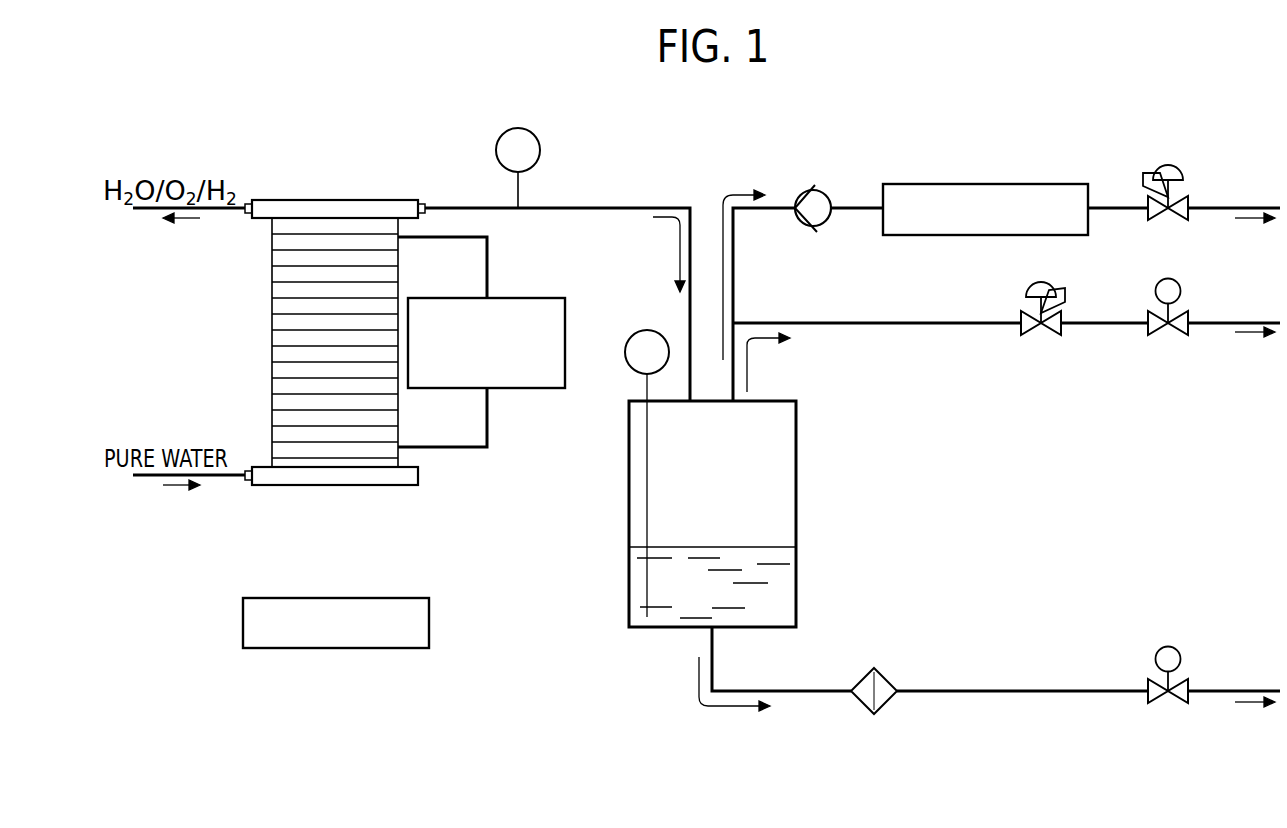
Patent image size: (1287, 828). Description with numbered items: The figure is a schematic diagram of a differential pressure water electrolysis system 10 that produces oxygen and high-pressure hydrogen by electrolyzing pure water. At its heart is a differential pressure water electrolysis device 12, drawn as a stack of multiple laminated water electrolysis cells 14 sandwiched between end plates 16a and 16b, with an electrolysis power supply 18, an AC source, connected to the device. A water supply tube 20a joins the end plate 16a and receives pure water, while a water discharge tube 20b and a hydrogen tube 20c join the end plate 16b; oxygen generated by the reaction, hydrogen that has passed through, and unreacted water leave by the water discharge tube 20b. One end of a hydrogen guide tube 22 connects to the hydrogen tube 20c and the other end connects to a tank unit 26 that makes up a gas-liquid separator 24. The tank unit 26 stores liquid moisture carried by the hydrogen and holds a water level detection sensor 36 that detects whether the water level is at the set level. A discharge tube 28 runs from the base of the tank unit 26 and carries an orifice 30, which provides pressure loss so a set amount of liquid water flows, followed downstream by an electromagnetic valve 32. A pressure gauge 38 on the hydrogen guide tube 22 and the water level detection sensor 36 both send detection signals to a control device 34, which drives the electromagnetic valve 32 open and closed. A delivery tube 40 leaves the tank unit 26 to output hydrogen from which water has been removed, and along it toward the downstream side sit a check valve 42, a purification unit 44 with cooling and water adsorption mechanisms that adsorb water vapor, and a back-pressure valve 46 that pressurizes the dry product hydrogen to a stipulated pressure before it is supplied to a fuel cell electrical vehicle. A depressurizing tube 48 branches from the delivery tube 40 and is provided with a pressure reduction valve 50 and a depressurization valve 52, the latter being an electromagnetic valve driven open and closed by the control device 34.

The differential pressure water electrolysis system 10 is at (823, 106).
The differential pressure water electrolysis device 12 is at (377, 182).
The water electrolysis cells 14 is at (292, 332).
The end plate 16a is at (313, 486).
The end plate 16b is at (318, 207).
The electrolysis power supply 18 is at (545, 389).
The water supply tube 20a is at (247, 467).
The water discharge tube 20b is at (247, 218).
The hydrogen tube 20c is at (423, 200).
The hydrogen guide tube 22 is at (607, 208).
The gas-liquid separator 24 is at (818, 437).
The tank unit 26 is at (797, 487).
The discharge tube 28 is at (1022, 690).
The orifice 30 is at (885, 672).
The electromagnetic valve 32 is at (1173, 650).
The control device 34 is at (410, 598).
The water level detection sensor 36 is at (641, 330).
The pressure gauge 38 is at (519, 124).
The delivery tube 40 is at (735, 272).
The check valve 42 is at (820, 203).
The purification unit 44 is at (1072, 187).
The back-pressure valve 46 is at (1178, 172).
The depressurizing tube 48 is at (877, 320).
The pressure reduction valve 50 is at (1047, 287).
The depressurization valve 52 is at (1178, 283).